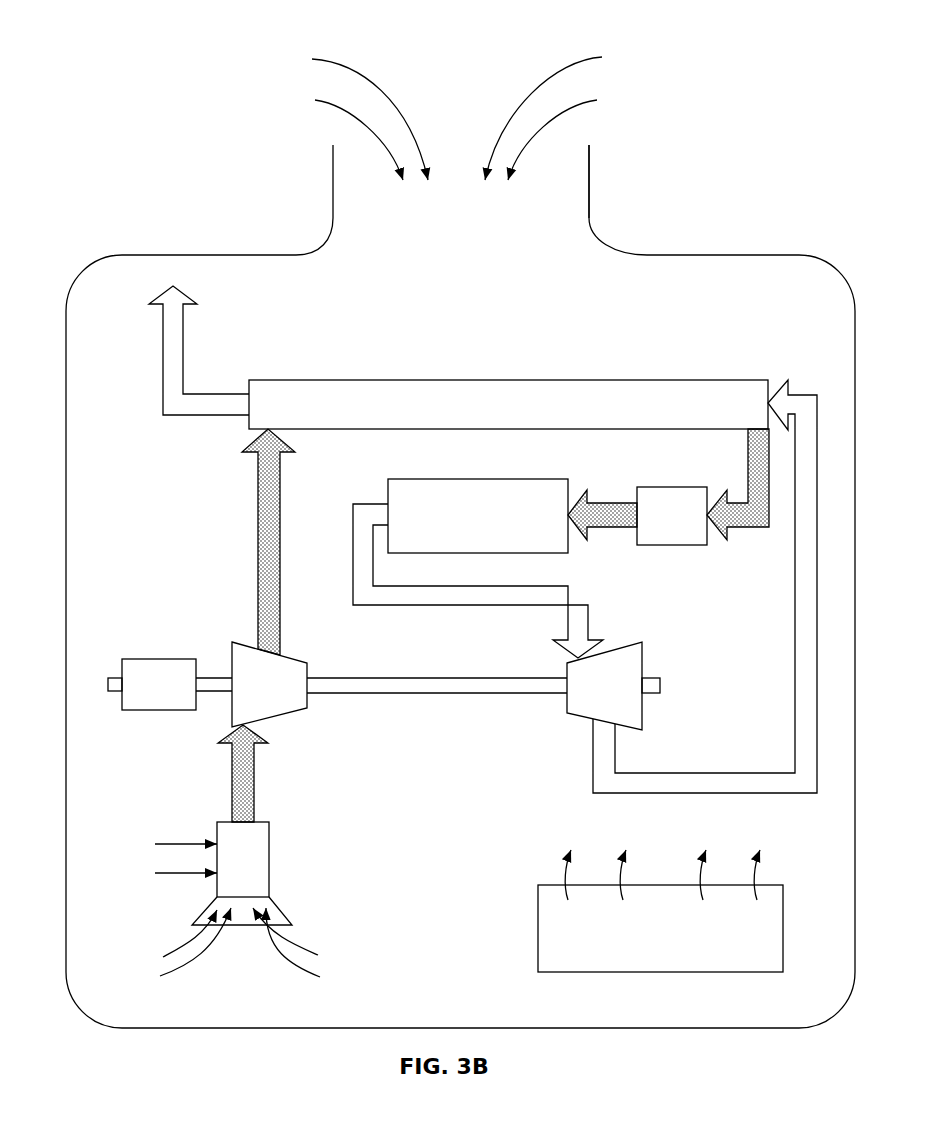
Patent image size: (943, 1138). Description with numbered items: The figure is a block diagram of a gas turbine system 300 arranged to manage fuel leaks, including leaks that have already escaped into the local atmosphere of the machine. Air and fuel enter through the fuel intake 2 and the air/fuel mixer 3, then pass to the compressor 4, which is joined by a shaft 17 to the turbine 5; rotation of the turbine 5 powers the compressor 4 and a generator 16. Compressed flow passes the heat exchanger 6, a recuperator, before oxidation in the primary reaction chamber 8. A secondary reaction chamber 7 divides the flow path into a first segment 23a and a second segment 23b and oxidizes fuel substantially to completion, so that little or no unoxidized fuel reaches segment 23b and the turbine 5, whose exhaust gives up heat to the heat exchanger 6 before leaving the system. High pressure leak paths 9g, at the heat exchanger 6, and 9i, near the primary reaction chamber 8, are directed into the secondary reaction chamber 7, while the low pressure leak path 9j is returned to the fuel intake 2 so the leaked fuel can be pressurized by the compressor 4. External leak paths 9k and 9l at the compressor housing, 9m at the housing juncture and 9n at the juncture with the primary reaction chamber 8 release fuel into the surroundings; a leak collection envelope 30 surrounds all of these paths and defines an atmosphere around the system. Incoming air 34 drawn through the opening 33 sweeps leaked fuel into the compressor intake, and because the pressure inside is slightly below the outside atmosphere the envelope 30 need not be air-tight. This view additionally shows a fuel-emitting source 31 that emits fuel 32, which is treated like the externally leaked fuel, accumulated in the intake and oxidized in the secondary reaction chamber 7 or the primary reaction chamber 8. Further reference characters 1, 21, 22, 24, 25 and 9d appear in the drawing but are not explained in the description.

The gas turbine system 300 is at (122, 41).
The leak collection envelope 30 is at (663, 257).
The opening 33 is at (591, 187).
The incoming air 34 is at (553, 64).
The exhaust outlet 25 is at (183, 350).
The heat exchanger 6 is at (508, 404).
The compressed air conduit 21 is at (258, 575).
The leak path 9m is at (257, 487).
The high pressure leak path 9g is at (748, 452).
The high pressure leak path 9i is at (665, 452).
The secondary reaction chamber 7 is at (478, 516).
The primary reaction chamber 8 is at (672, 516).
The fuel conduit 22 is at (748, 487).
The flow path segment 23a is at (617, 527).
The leak path 9n is at (752, 583).
The flow path segment 23b is at (485, 607).
The control signal 9d is at (590, 604).
The turbine 5 is at (613, 686).
The turbine exhaust conduit 24 is at (715, 795).
The shaft 17 is at (450, 695).
The compressor 4 is at (269, 684).
The generator 16 is at (170, 684).
The leak path 9k is at (155, 613).
The leak path 9l is at (310, 670).
The low pressure leak path 9j is at (269, 857).
The air/fuel mixer 3 is at (269, 870).
The inlet air 1 is at (280, 970).
The fuel intake 2 is at (168, 843).
The fuel-emitting source 31 is at (660, 928).
The fuel 32 is at (628, 868).